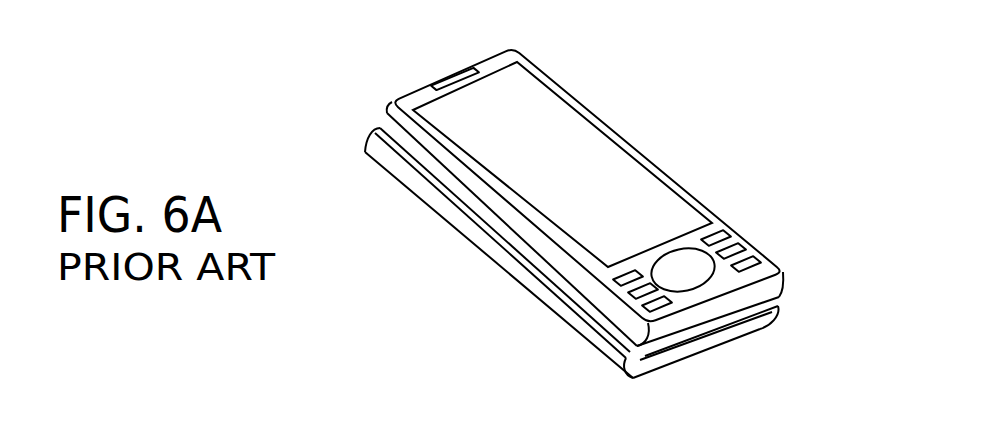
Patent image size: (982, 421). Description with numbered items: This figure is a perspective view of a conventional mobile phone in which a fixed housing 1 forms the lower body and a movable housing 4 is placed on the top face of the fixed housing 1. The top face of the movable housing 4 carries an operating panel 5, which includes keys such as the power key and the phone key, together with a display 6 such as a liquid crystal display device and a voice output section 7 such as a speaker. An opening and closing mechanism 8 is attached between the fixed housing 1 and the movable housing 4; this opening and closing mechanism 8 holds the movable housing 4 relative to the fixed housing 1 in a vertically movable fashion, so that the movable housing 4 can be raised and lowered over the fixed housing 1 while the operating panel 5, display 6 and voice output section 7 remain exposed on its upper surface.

The fixed housing 1 is at (762, 328).
The movable housing 4 is at (783, 272).
The operating panel 5 is at (727, 235).
The display 6 is at (577, 150).
The voice output section 7 is at (513, 48).
The opening and closing mechanism 8 is at (513, 245).